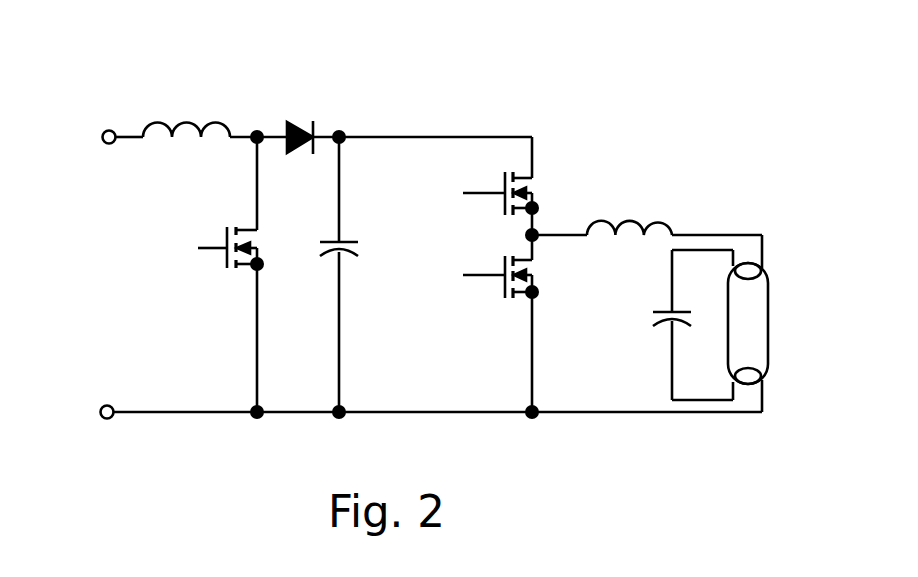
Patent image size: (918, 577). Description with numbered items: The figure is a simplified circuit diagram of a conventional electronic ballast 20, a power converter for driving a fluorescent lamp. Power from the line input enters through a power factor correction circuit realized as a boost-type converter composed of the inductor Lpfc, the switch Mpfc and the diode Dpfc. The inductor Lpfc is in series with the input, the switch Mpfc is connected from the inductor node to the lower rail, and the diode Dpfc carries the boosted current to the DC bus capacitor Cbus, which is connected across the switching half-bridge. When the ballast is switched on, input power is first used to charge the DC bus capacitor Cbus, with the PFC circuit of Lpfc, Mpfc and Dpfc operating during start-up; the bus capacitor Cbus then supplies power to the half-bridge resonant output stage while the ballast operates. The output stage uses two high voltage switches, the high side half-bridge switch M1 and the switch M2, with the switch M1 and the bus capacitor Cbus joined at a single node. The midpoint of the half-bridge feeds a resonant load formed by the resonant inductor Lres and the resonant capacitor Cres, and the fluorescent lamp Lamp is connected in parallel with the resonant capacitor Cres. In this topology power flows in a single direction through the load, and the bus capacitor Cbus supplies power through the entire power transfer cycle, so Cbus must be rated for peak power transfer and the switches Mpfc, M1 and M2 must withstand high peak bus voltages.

The ballast circuit 20 is at (548, 75).
The inductor Lpfc is at (186, 149).
The diode Dpfc is at (304, 157).
The switch Mpfc is at (220, 265).
The DC bus capacitor Cbus is at (371, 270).
The high side half-bridge switch M1 is at (521, 190).
The half-bridge switch M2 is at (521, 281).
The resonant inductor Lres is at (629, 208).
The resonant capacitor Cres is at (666, 325).
The fluorescent lamp Lamp is at (748, 323).